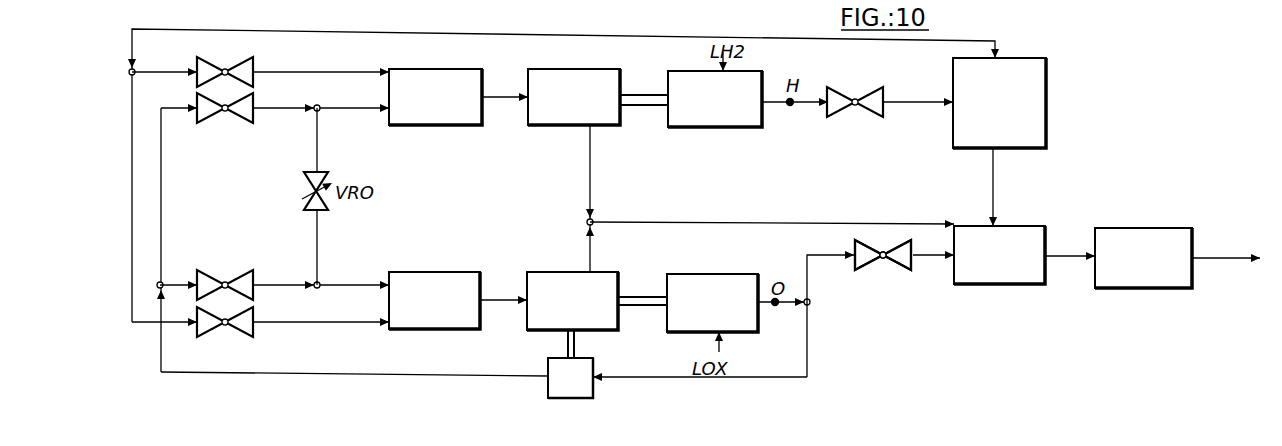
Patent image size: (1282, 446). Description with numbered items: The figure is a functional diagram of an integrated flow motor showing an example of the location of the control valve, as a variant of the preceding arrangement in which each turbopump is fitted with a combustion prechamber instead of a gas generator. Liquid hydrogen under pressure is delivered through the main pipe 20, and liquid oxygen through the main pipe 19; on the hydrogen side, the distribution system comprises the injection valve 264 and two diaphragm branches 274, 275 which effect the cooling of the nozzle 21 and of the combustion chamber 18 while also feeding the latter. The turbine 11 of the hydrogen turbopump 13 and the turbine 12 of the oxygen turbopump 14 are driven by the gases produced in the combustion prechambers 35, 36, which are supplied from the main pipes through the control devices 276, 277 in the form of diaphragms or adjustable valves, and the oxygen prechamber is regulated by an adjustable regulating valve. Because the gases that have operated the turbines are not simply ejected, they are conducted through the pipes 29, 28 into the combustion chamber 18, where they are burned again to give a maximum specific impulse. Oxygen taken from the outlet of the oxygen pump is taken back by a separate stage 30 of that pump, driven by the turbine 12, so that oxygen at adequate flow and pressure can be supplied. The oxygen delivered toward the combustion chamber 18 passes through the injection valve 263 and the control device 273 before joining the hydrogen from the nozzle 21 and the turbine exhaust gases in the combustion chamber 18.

The pipe 20 is at (480, 33).
The pipe 19 is at (402, 375).
The diaphragm branch 274 is at (260, 62).
The control device 276 is at (275, 118).
The control device 277 is at (274, 274).
The diaphragm branch 275 is at (260, 332).
The combustion prechamber 35 is at (447, 108).
The combustion prechamber 36 is at (445, 311).
The turbine 11 is at (585, 108).
The turbine 12 is at (585, 312).
The turbopump 13 is at (726, 110).
The turbopump 14 is at (724, 312).
The injection valve 264 is at (857, 112).
The injection valve 263 is at (880, 271).
The control device 273 is at (883, 277).
The nozzle 21 is at (1010, 112).
The combustion chamber 18 is at (1011, 266).
The pipe 29 is at (602, 173).
The pipe 28 is at (602, 247).
The separate stage 30 is at (582, 389).